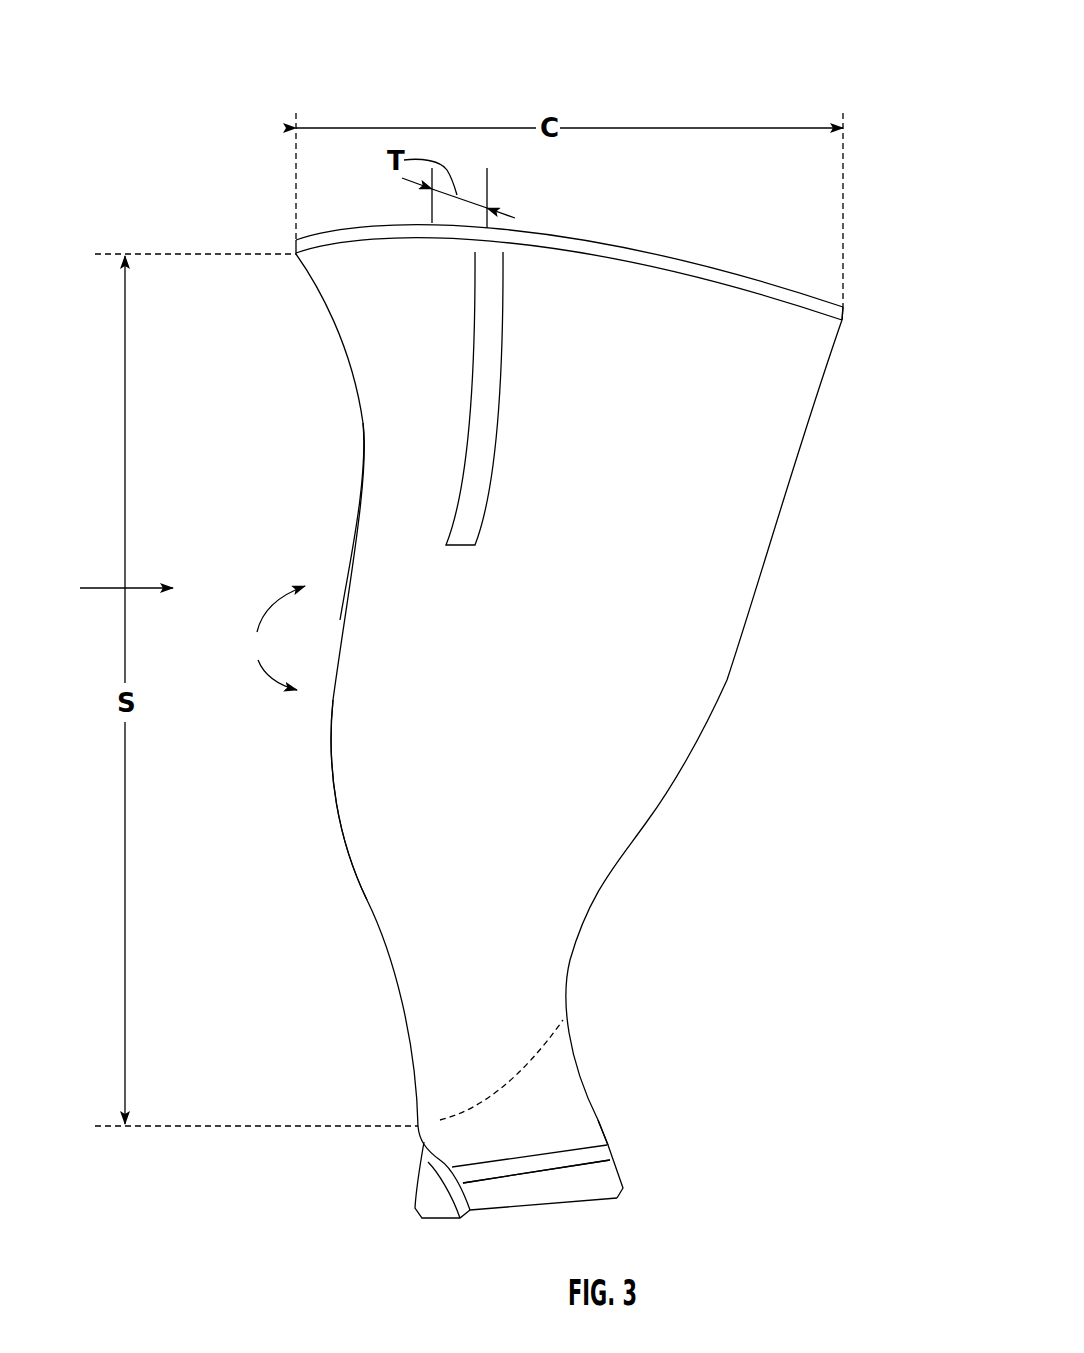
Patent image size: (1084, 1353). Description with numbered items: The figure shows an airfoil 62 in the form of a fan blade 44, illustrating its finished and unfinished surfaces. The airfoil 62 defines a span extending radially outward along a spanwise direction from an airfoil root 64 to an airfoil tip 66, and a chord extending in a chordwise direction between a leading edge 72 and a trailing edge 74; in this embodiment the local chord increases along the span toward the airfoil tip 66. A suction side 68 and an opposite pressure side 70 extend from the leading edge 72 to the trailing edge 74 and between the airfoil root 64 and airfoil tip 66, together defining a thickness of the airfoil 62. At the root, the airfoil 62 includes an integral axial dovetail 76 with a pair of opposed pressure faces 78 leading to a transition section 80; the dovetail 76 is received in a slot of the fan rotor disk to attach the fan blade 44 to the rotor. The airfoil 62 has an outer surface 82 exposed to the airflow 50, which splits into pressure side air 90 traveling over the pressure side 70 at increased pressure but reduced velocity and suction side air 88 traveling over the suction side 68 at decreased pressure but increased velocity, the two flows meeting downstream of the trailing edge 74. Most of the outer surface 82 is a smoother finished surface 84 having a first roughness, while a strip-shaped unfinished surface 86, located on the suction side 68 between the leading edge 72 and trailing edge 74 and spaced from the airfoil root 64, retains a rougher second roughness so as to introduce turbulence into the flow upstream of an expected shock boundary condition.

The fan blade 44 is at (569, 650).
The airflow 50 is at (100, 587).
The airfoil 62 is at (569, 563).
The airfoil root 64 is at (533, 1057).
The airfoil tip 66 is at (598, 248).
The suction side 68 is at (569, 690).
The pressure side 70 is at (360, 565).
The leading edge 72 is at (328, 787).
The trailing edge 74 is at (727, 678).
The axial dovetail 76 is at (440, 1208).
The pressure faces 78 is at (422, 1188).
The transition section 80 is at (573, 1115).
The outer surface 82 is at (873, 332).
The finished surface 84 is at (388, 465).
The unfinished surface 86 is at (495, 292).
The suction side air 88 is at (270, 683).
The pressure side air 90 is at (267, 605).